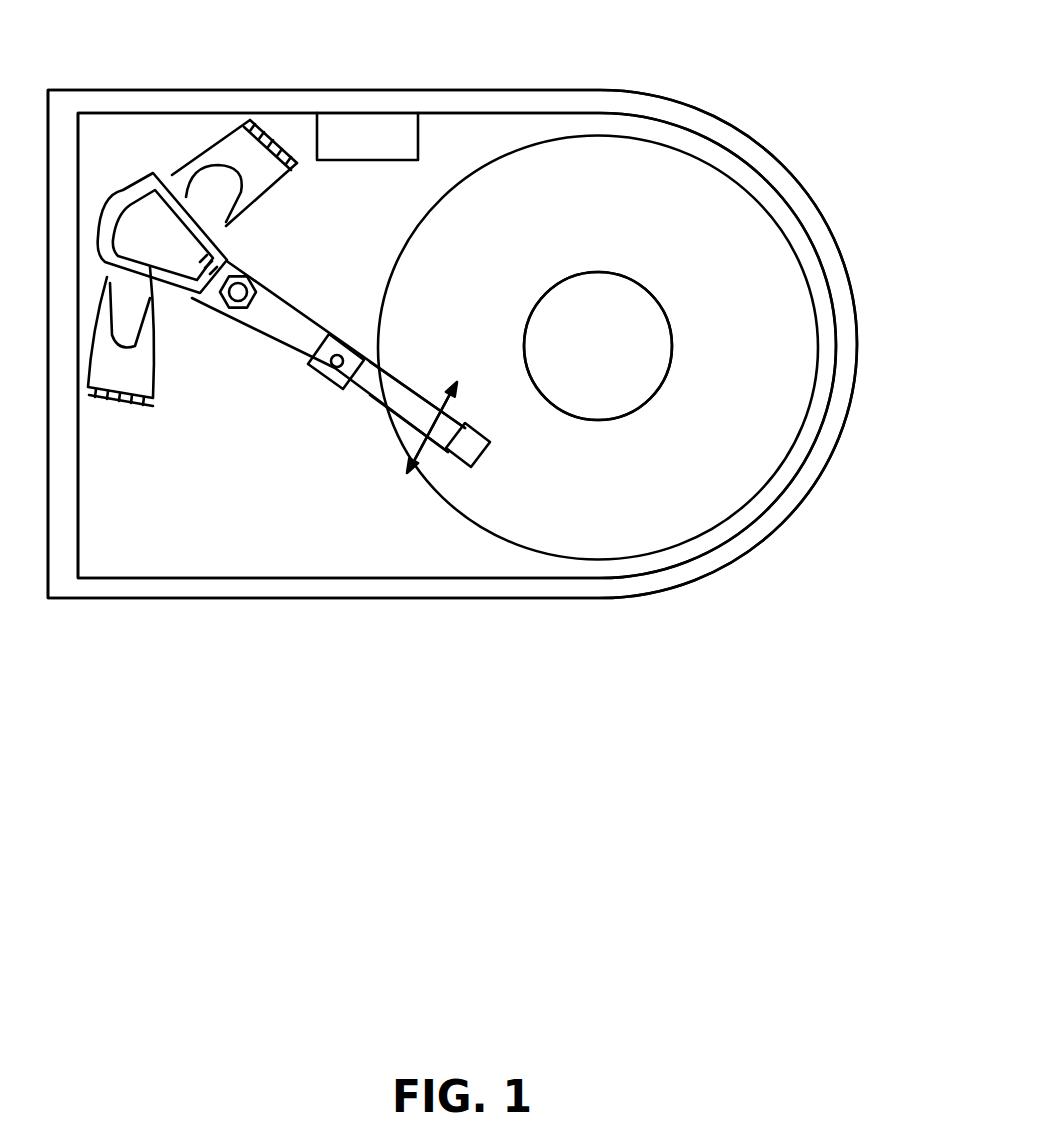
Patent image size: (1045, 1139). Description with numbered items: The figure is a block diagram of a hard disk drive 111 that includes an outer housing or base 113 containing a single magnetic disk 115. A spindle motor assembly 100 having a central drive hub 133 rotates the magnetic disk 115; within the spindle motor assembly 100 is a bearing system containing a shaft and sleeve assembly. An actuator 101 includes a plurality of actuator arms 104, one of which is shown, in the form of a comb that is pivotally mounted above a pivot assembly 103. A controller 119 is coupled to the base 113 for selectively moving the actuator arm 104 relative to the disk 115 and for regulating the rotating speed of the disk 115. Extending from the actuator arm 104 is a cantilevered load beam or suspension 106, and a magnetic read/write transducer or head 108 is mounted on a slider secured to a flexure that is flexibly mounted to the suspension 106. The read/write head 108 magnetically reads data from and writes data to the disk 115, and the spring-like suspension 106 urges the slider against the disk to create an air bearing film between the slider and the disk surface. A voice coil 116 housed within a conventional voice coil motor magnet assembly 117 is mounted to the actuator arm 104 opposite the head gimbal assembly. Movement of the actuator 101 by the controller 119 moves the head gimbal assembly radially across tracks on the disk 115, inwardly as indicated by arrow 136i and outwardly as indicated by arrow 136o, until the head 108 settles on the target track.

The spindle motor assembly 100 is at (822, 295).
The actuator 101 is at (186, 460).
The pivot assembly 103 is at (253, 275).
The actuator arm 104 is at (305, 302).
The load beam or suspension 106 is at (393, 377).
The read/write head 108 is at (485, 450).
The hard disk drive 111 is at (803, 84).
The outer housing or base 113 is at (497, 88).
The magnetic disk 115 is at (770, 270).
The voice coil 116 is at (118, 195).
The voice coil motor magnet assembly 117 is at (255, 172).
The controller 119 is at (345, 130).
The central drive hub 133 is at (598, 342).
The arrow indicating inward movement 136i is at (452, 408).
The arrow indicating outward movement 136o is at (409, 451).